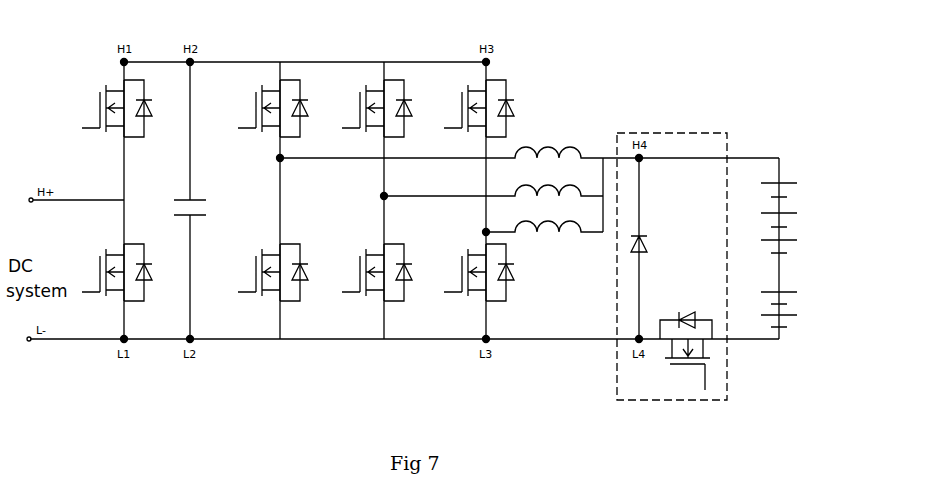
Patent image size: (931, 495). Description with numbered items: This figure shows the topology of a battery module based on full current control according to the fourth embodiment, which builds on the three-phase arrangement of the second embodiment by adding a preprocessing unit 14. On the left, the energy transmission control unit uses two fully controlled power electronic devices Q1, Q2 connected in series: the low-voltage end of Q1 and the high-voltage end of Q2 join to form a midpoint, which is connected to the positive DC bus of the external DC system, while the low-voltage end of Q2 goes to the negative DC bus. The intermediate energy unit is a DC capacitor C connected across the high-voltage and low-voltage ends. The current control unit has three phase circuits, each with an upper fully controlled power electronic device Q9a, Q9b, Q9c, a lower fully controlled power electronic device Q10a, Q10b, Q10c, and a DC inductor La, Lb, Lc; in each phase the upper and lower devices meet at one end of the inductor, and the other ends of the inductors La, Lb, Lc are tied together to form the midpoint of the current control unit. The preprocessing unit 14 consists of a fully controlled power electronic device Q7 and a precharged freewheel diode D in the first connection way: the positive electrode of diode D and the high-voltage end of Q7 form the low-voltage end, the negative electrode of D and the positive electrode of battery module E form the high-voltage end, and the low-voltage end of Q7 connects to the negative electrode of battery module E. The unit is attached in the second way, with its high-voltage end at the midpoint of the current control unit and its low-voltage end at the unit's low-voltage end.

The preprocessing unit 14 is at (672, 281).
The fully controlled power electronic device Q1 is at (111, 108).
The fully controlled power electronic device Q2 is at (109, 272).
The DC capacitor C is at (198, 210).
The upper fully controlled power electronic device Q9a is at (265, 108).
The upper fully controlled power electronic device Q9b is at (369, 108).
The upper fully controlled power electronic device Q9c is at (471, 108).
The lower fully controlled power electronic device Q10a is at (262, 272).
The lower fully controlled power electronic device Q10b is at (366, 272).
The lower fully controlled power electronic device Q10c is at (469, 272).
The DC inductor La is at (441, 143).
The DC inductor Lb is at (493, 182).
The DC inductor Lc is at (544, 235).
The precharged freewheel diode D is at (646, 248).
The fully controlled power electronic device Q7 is at (686, 352).
The battery module E is at (786, 248).